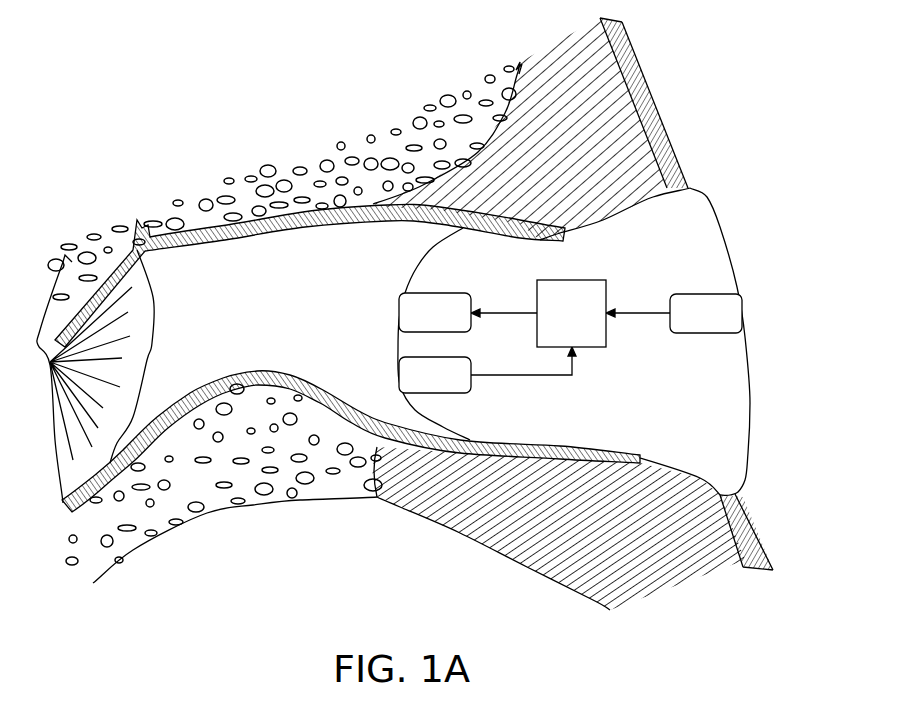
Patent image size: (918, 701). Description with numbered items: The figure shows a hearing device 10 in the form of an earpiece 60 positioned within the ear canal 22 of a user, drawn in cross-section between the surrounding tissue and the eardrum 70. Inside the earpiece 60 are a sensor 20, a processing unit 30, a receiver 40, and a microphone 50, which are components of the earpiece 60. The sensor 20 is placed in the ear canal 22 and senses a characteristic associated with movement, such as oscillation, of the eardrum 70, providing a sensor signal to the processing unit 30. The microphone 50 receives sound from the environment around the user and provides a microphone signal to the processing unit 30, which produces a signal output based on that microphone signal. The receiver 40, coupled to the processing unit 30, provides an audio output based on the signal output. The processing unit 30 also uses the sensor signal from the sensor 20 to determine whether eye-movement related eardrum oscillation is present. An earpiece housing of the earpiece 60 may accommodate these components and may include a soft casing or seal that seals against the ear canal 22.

The hearing device 10 is at (742, 128).
The sensor 20 is at (399, 380).
The ear canal 22 is at (188, 287).
The processing unit 30 is at (552, 280).
The receiver 40 is at (420, 293).
The microphone 50 is at (708, 293).
The earpiece 60 is at (705, 392).
The eardrum 70 is at (105, 420).